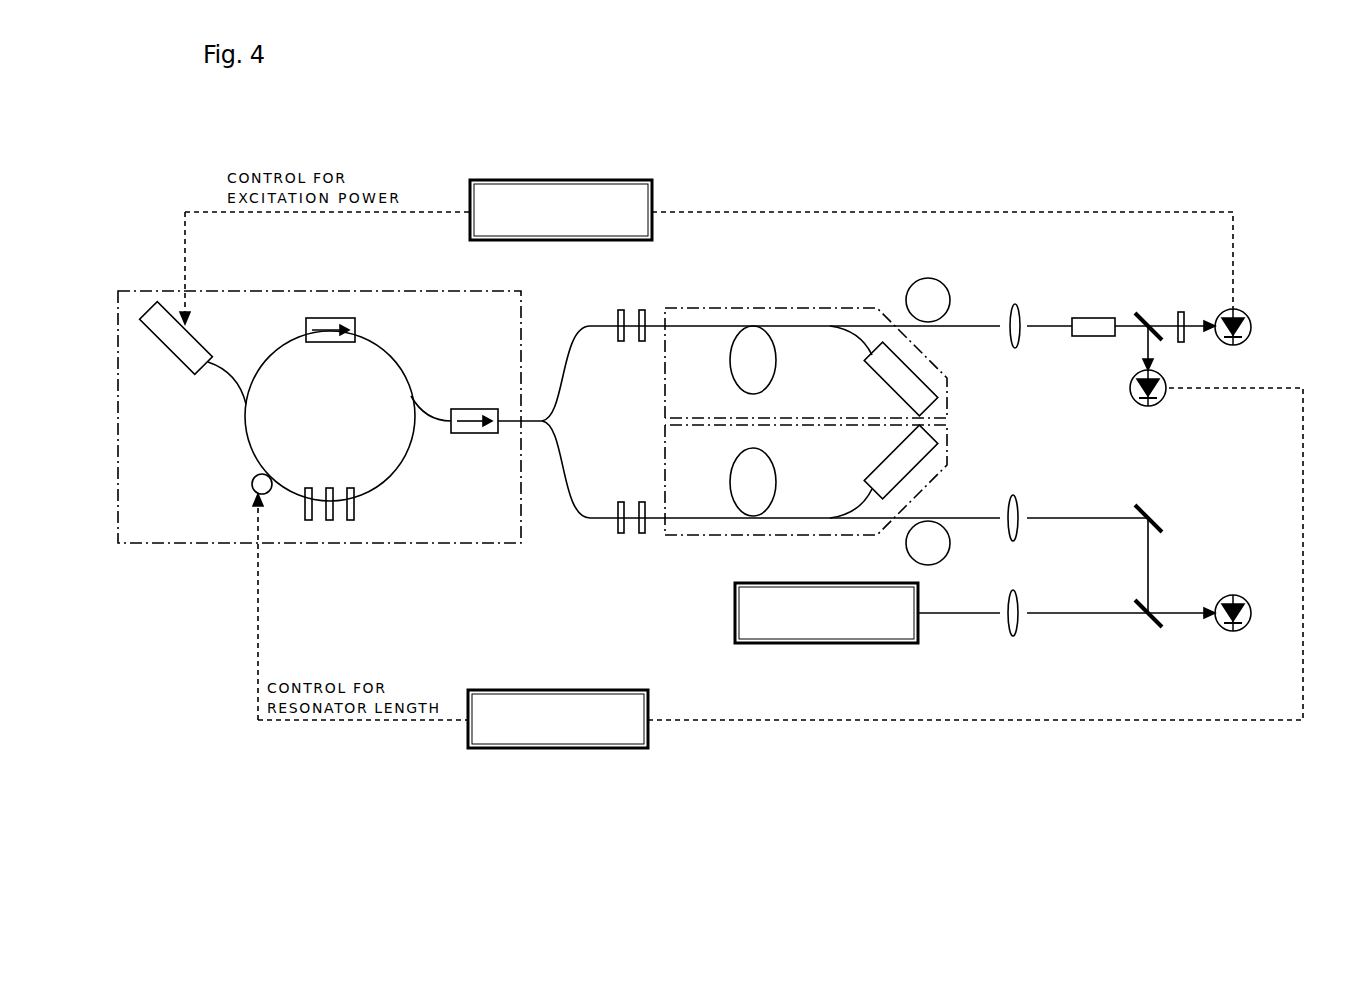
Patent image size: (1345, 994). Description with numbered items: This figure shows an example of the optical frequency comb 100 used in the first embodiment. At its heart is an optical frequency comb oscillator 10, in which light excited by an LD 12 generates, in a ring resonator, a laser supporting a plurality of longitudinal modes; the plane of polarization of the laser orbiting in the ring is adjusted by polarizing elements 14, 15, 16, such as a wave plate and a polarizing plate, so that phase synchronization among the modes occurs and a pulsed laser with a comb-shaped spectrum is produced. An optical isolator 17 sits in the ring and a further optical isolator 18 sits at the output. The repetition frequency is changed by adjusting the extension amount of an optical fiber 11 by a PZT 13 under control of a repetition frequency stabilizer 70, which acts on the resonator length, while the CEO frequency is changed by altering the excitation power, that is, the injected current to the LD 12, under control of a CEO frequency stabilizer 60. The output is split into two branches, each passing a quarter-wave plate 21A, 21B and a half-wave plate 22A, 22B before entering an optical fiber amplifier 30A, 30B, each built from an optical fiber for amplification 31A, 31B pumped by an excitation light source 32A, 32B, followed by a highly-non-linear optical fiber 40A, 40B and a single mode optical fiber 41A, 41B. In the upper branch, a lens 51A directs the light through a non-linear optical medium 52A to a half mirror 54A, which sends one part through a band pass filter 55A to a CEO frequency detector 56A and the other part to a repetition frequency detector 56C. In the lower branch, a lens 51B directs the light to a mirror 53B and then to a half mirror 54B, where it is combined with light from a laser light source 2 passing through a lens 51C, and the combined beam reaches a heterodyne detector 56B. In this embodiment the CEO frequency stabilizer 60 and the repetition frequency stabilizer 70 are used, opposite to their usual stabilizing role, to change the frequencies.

The laser light source 2 is at (863, 644).
The optical frequency comb oscillator 10 is at (156, 290).
The optical fiber 11 is at (251, 487).
The LD (laser diode) 12 is at (158, 345).
The PZT 13 is at (254, 478).
The polarizing element 14 is at (308, 486).
The polarizing element 15 is at (329, 486).
The polarizing element 16 is at (350, 486).
The optical isolator 17 is at (330, 343).
The optical isolator 18 is at (475, 408).
The λ/4 plate 21A is at (621, 342).
The λ/4 plate 21B is at (621, 534).
The λ/2 plate 22A is at (642, 342).
The λ/2 plate 22B is at (642, 534).
The optical fiber amplifier 30A is at (707, 308).
The optical fiber amplifier 30B is at (707, 535).
The optical fiber for amplification 31A is at (777, 372).
The optical fiber for amplification 31B is at (777, 468).
The excitation light source 32A is at (872, 380).
The excitation light source 32B is at (890, 448).
The highly-non-linear optical fiber 40A is at (907, 292).
The highly-non-linear optical fiber 40B is at (907, 552).
The single mode optical fiber 41A is at (984, 330).
The single mode optical fiber 41B is at (975, 517).
The lens 51A is at (1015, 303).
The lens 51B is at (1020, 497).
The lens 51C is at (1020, 622).
The non-linear optical medium 52A is at (1093, 338).
The mirror 53B is at (1147, 503).
The half mirror 54A is at (1140, 311).
The half mirror 54B is at (1153, 629).
The band pass filter 55A is at (1181, 310).
The CEO frequency detector 56A is at (1252, 318).
The heterodyne detector 56B is at (1238, 595).
The repetition frequency detector 56C is at (1167, 398).
The CEO frequency stabilizer 60 is at (565, 180).
The repetition frequency stabilizer 70 is at (585, 749).
The optical frequency comb 100 is at (1237, 158).